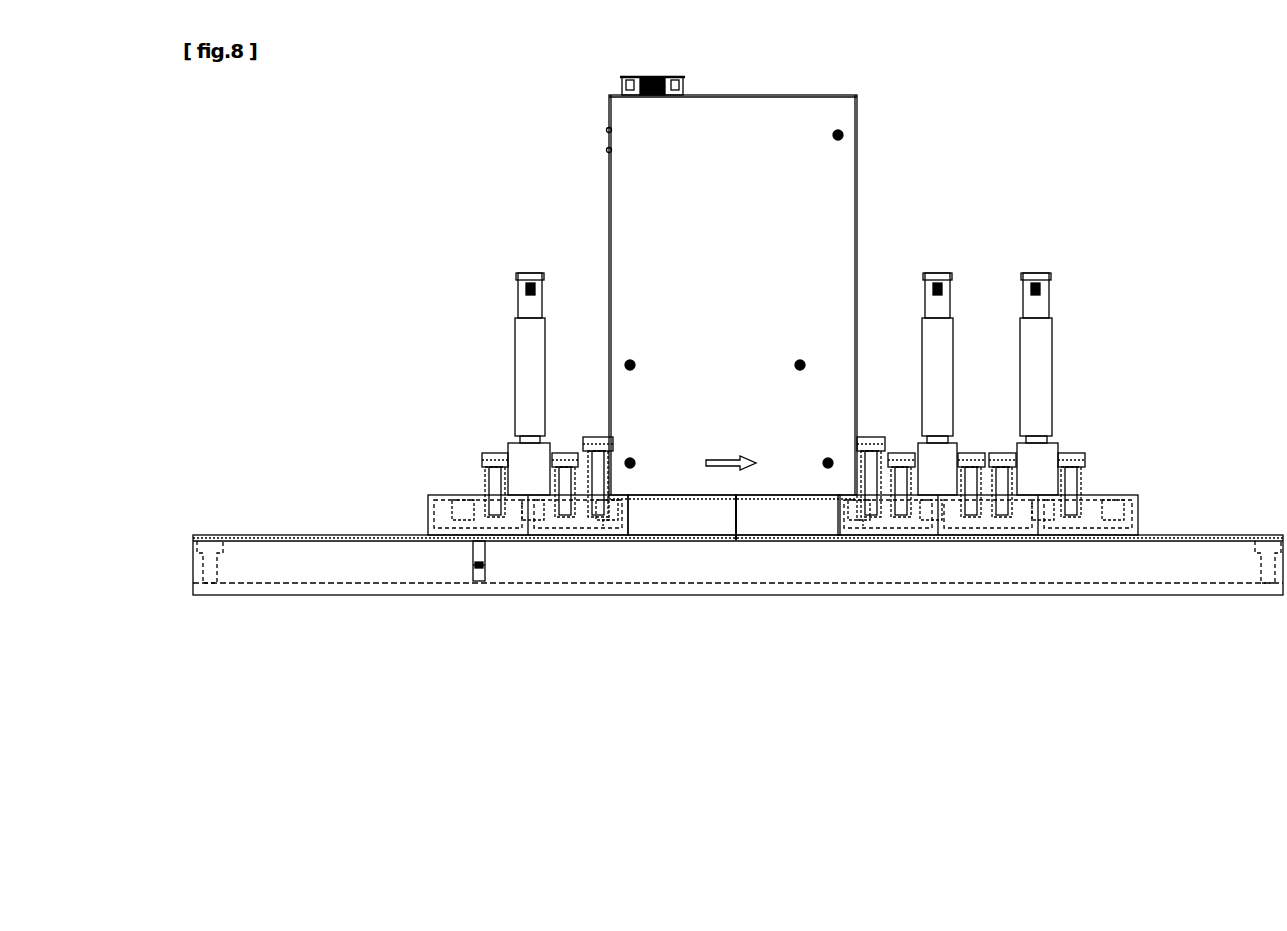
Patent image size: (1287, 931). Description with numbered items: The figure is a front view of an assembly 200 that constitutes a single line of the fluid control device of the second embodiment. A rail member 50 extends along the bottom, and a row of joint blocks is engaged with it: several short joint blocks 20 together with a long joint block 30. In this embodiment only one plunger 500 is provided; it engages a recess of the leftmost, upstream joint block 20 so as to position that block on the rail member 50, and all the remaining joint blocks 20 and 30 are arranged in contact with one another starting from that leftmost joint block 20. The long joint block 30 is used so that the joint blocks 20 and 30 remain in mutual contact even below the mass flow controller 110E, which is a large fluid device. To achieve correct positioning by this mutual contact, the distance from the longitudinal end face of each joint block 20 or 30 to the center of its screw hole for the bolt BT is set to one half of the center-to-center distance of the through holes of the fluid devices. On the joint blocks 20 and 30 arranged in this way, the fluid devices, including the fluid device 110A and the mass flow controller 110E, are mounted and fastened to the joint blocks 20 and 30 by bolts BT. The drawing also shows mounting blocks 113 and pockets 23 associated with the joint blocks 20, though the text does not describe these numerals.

The assembly 200 is at (878, 92).
The mass flow controller 110E is at (734, 90).
The fluid device 110A is at (520, 274).
The mounting block 113 is at (520, 455).
The bolt BT is at (483, 457).
The joint block 20 is at (430, 500).
The pocket / slot in holder 23 is at (462, 527).
The long joint block 30 is at (665, 518).
The rail member 50 is at (383, 565).
The plunger 500 is at (485, 580).